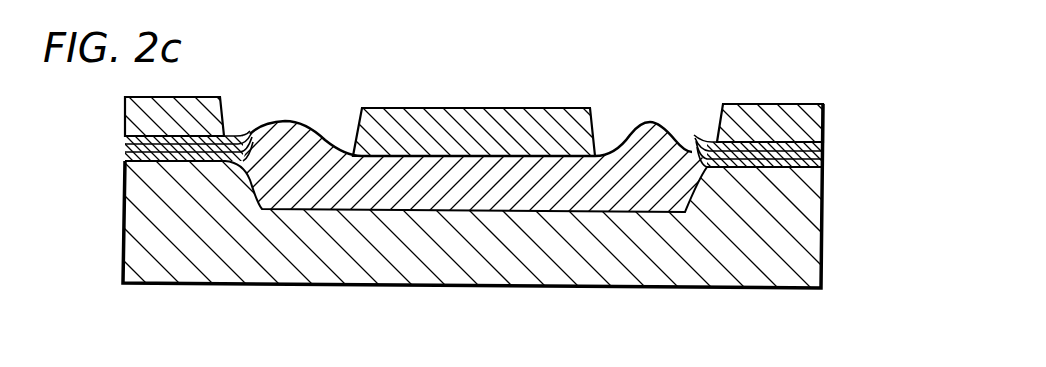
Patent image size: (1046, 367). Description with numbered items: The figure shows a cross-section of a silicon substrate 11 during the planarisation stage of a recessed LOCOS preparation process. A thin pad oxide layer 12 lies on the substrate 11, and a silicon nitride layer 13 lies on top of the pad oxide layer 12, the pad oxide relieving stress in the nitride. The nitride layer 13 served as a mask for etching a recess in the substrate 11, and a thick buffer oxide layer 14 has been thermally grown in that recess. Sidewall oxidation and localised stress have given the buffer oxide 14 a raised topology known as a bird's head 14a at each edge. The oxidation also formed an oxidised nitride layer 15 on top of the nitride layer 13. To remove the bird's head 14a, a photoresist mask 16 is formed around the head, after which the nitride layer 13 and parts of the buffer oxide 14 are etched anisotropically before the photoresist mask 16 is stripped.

The silicon substrate 11 is at (215, 247).
The pad oxide layer 12 is at (795, 167).
The silicon nitride layer 13 is at (128, 148).
The buffer oxide layer 14 is at (540, 197).
The bird's head 14a is at (285, 117).
The oxidised nitride layer 15 is at (798, 143).
The photoresist mask 16 is at (140, 115).